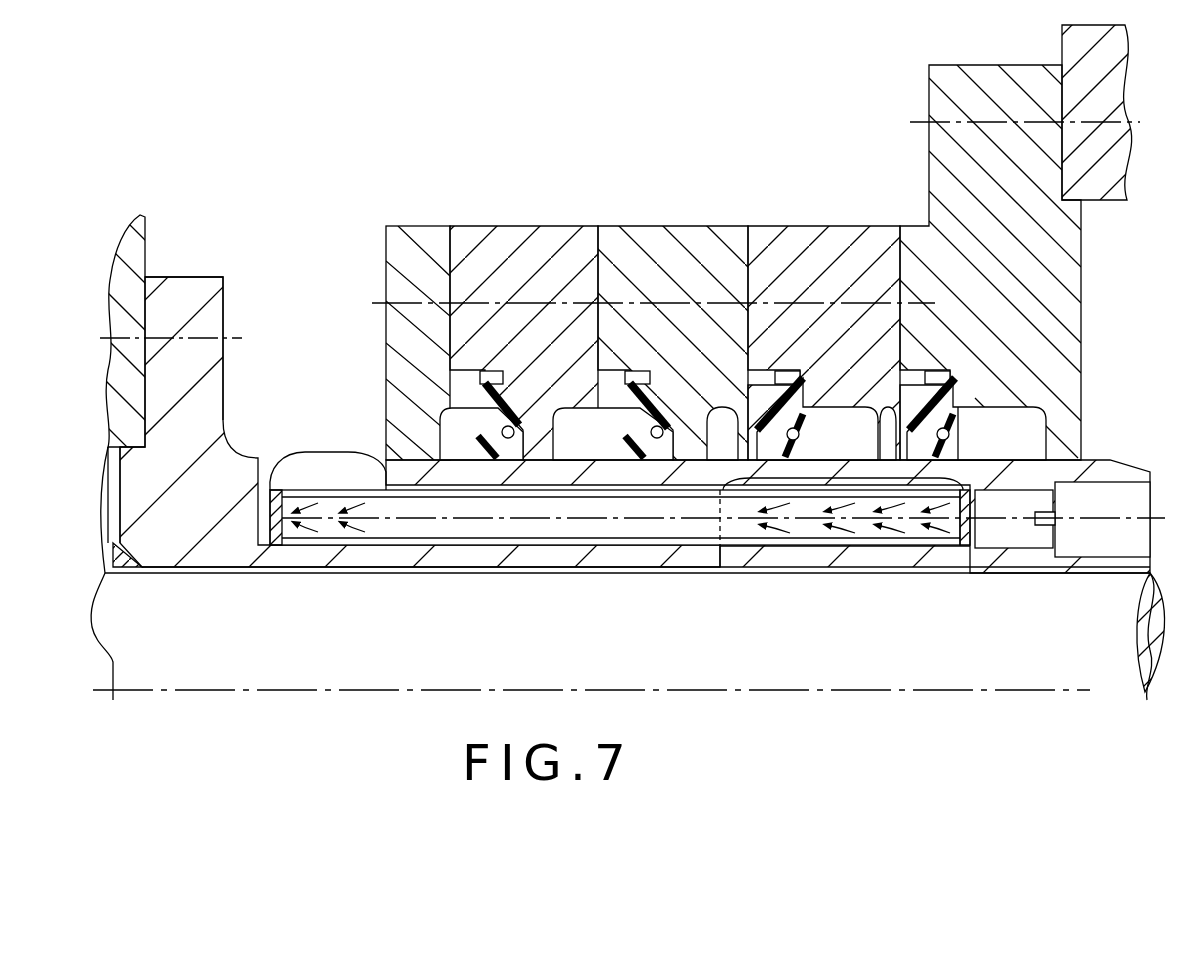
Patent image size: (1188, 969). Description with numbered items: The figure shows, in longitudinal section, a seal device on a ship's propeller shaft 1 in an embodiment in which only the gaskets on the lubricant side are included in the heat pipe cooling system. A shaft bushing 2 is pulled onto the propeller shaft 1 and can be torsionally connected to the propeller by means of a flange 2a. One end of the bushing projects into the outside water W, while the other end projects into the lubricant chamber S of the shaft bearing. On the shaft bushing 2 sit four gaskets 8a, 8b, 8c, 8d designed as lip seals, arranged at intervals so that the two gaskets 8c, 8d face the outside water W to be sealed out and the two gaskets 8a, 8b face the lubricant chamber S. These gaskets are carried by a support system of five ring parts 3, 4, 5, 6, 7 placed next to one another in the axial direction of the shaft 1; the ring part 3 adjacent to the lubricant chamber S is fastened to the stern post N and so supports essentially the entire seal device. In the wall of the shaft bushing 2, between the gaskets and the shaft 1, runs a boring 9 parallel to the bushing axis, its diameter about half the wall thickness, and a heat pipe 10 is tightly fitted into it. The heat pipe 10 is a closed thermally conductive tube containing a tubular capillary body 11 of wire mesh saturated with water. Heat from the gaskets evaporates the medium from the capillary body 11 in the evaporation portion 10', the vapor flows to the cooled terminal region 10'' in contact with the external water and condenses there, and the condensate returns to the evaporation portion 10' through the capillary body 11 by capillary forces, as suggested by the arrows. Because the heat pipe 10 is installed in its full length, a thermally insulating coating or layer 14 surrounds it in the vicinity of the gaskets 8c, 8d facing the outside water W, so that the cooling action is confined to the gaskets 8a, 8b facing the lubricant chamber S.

The propeller shaft 1 is at (771, 650).
The shaft bushing 2 is at (203, 557).
The flange 2a is at (185, 292).
The ring part 3 is at (942, 112).
The ring part 4 is at (832, 248).
The ring part 5 is at (695, 248).
The ring part 6 is at (542, 248).
The ring part 7 is at (430, 248).
The gasket 8a is at (957, 436).
The gasket 8b is at (800, 436).
The gasket 8c is at (632, 442).
The gasket 8d is at (447, 408).
The boring 9 is at (952, 555).
The heat pipe 10 is at (717, 566).
The evaporation portion 10' is at (843, 555).
The terminal region 10'' is at (324, 430).
The capillary body 11 is at (777, 545).
The thermally insulating coating 14 is at (511, 552).
The outside water W is at (290, 326).
The stern post N is at (1098, 62).
The lubricant chamber S is at (1122, 361).